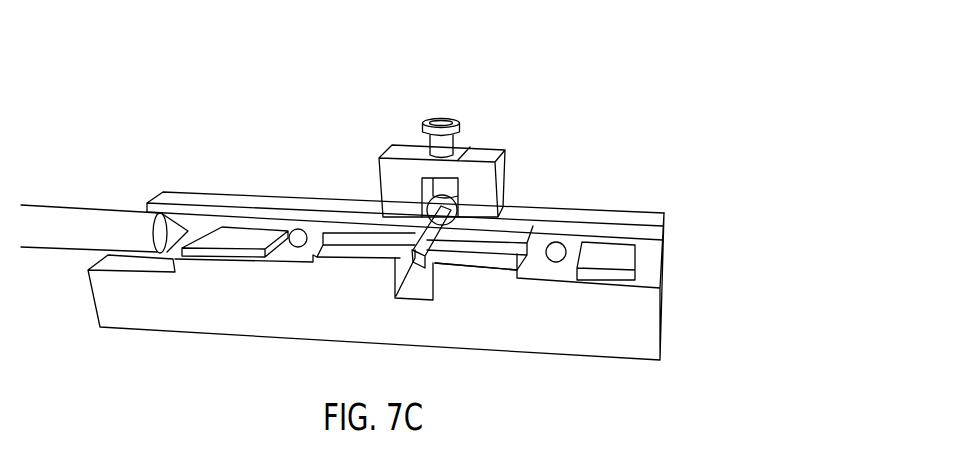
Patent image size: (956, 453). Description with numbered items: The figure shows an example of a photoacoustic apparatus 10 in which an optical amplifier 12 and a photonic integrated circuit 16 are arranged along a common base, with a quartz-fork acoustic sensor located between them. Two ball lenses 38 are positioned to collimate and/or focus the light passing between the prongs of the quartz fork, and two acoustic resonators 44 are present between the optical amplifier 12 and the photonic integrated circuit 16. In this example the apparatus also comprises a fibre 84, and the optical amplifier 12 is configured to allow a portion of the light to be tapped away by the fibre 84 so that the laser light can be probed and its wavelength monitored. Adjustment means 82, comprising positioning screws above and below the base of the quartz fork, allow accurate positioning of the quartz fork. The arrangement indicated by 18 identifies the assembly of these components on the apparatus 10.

The photoacoustic apparatus 10 is at (662, 317).
The optical amplifier 12 is at (222, 255).
The photonic integrated circuit 16 is at (635, 262).
The fiber holding assembly 18 is at (584, 181).
The ball lenses 38 is at (293, 247).
The acoustic resonators 44 is at (357, 243).
The adjustment means 82 is at (442, 118).
The fibre 84 is at (83, 223).